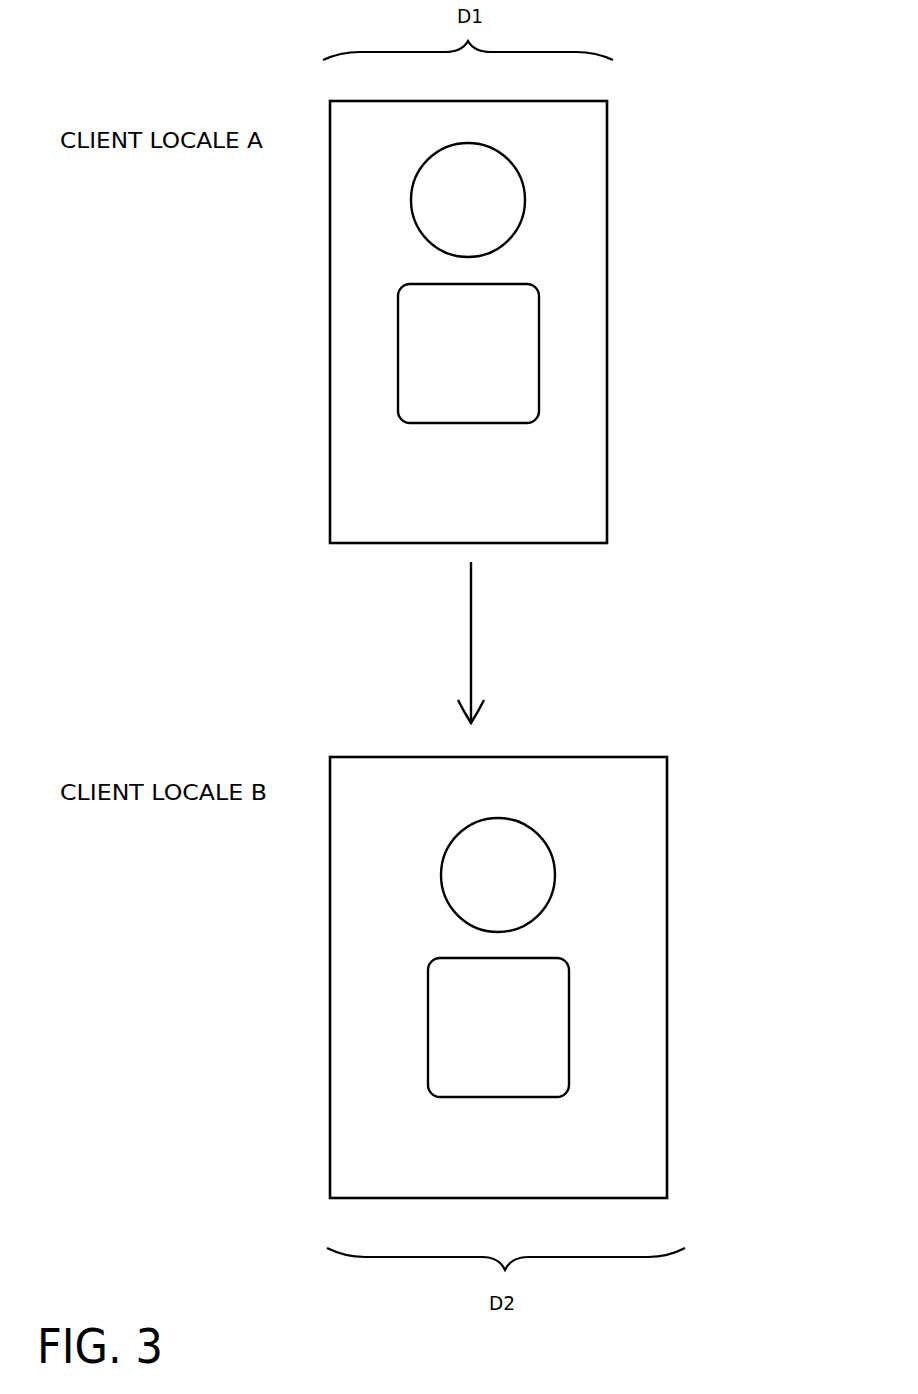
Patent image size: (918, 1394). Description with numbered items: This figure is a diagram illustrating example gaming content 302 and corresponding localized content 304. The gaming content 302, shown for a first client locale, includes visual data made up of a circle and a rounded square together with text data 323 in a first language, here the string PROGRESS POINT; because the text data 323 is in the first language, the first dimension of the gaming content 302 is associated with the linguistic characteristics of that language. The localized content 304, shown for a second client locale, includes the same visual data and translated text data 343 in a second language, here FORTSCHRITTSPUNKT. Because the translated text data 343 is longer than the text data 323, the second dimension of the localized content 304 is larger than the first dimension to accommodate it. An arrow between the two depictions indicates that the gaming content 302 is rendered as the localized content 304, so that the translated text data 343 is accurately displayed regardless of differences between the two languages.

The gaming content 302 is at (672, 100).
The localized content 304 is at (721, 784).
The text data 323 is at (590, 511).
The translated text data 343 is at (650, 1163).